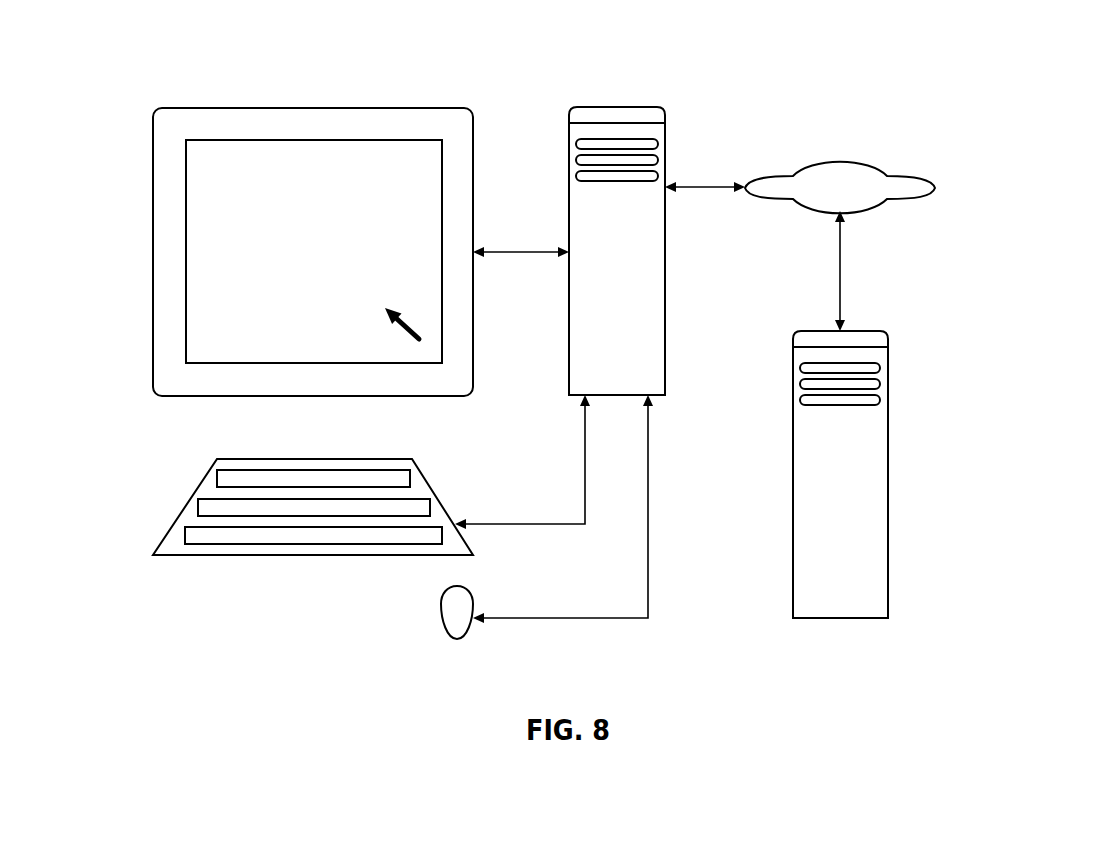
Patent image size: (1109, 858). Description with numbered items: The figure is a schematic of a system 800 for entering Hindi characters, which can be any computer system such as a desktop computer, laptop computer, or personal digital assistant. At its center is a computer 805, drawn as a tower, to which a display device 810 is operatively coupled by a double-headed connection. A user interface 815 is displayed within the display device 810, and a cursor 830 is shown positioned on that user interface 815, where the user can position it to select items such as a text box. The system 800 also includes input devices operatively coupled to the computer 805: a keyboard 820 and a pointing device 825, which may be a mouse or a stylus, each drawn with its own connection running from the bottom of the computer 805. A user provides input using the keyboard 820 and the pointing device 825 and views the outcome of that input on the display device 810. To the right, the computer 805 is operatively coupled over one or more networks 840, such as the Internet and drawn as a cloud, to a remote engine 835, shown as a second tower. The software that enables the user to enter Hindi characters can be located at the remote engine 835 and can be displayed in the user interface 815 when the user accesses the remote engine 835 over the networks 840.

The system 800 is at (761, 72).
The computer 805 is at (633, 270).
The display device 810 is at (153, 140).
The user interface 815 is at (186, 203).
The keyboard 820 is at (308, 544).
The pointing device 825 is at (441, 618).
The cursor 830 is at (390, 327).
The remote engine 835 is at (858, 493).
The networks 840 is at (840, 163).